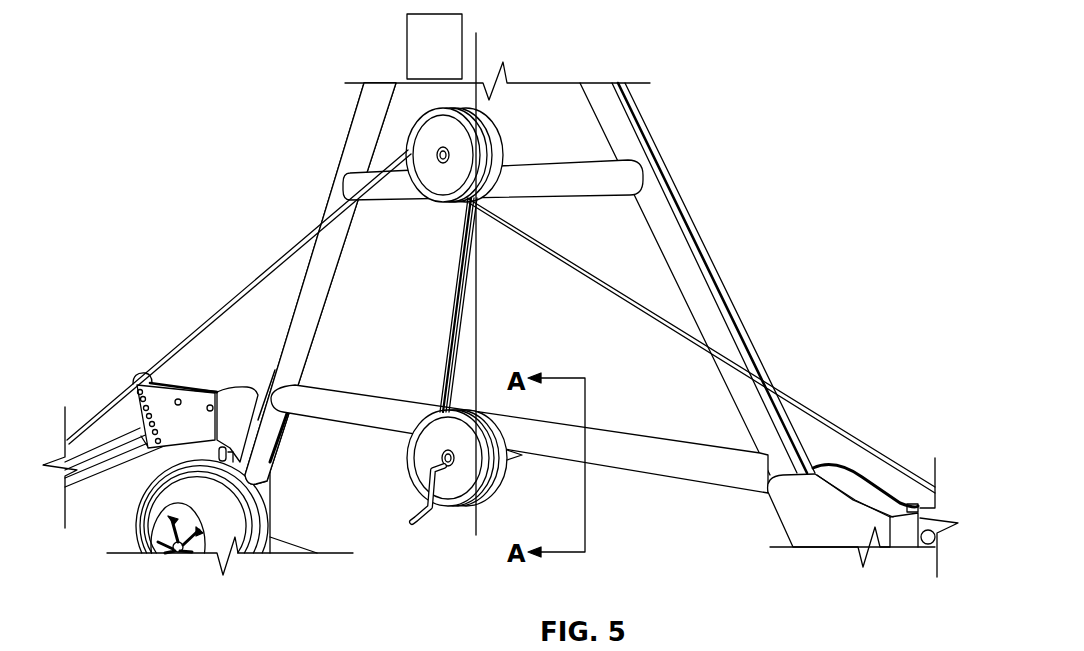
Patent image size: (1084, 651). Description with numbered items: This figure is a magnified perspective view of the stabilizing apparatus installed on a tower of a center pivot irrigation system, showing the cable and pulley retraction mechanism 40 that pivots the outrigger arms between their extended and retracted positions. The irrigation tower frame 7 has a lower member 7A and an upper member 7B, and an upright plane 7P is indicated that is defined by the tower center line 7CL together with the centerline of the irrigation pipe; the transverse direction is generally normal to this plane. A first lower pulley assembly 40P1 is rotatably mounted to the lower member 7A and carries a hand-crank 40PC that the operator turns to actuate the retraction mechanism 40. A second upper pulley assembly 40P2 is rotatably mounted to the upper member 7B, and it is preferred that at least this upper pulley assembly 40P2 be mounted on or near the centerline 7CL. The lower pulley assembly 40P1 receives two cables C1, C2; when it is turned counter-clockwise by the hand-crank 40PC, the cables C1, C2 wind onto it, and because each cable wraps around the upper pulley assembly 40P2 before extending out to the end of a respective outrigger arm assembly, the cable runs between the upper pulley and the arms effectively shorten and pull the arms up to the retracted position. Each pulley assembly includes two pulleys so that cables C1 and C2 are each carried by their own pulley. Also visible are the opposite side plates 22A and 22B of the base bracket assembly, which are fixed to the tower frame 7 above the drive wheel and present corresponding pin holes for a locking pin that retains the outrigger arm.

The irrigation tower frame 7 is at (712, 232).
The lower member 7A is at (640, 433).
The upper member 7B is at (593, 168).
The irrigation tower center line 7CL is at (478, 57).
The upright plane 7P is at (451, 57).
The retraction mechanism 40 is at (444, 343).
The first lower pulley assembly 40P1 is at (427, 455).
The second upper pulley assembly 40P2 is at (487, 127).
The hand-crank 40PC is at (430, 518).
The cable C1 is at (587, 270).
The cable C2 is at (228, 298).
The side plate 22A is at (783, 507).
The side plate 22B is at (857, 487).